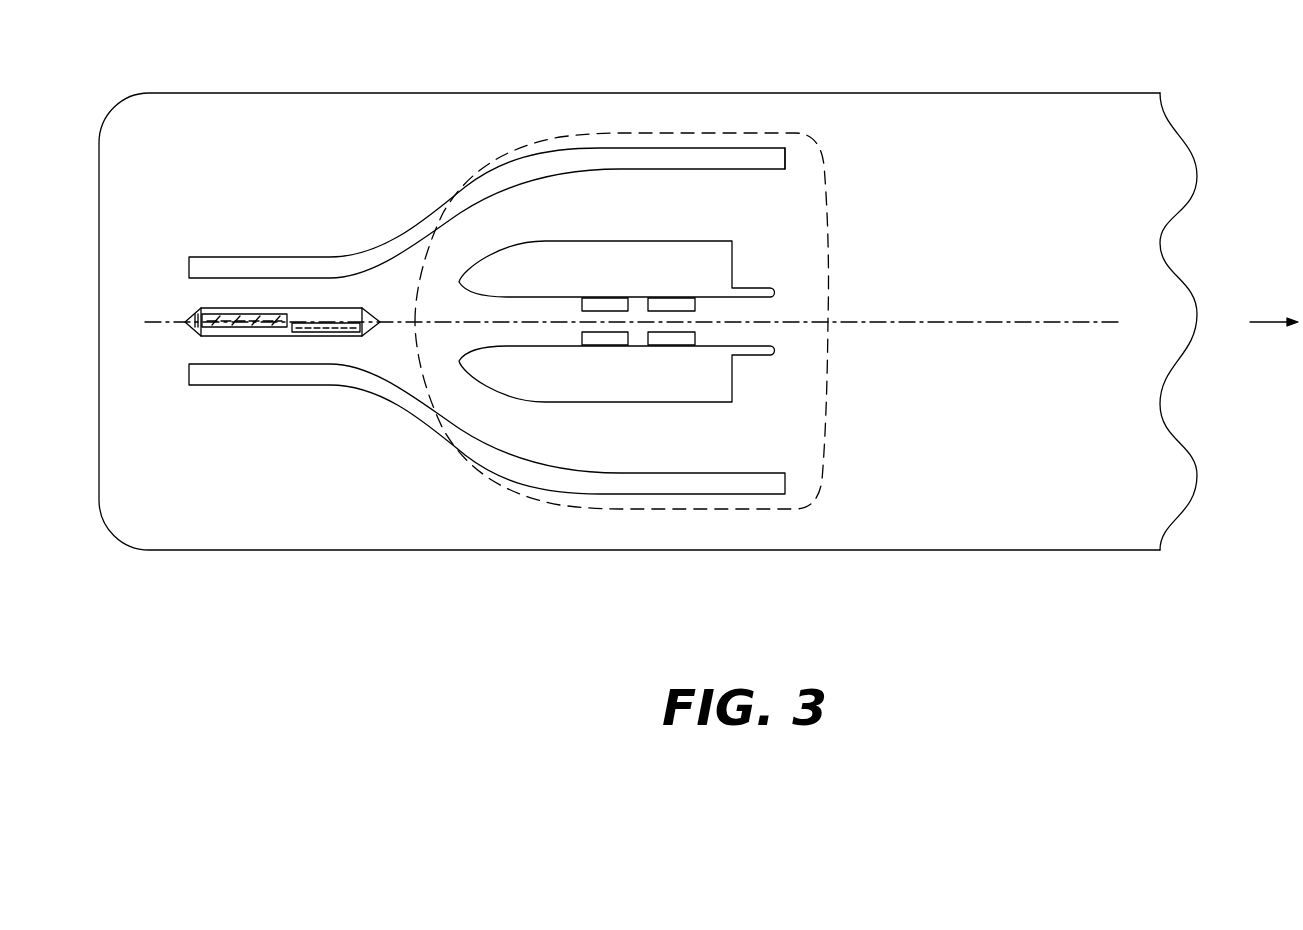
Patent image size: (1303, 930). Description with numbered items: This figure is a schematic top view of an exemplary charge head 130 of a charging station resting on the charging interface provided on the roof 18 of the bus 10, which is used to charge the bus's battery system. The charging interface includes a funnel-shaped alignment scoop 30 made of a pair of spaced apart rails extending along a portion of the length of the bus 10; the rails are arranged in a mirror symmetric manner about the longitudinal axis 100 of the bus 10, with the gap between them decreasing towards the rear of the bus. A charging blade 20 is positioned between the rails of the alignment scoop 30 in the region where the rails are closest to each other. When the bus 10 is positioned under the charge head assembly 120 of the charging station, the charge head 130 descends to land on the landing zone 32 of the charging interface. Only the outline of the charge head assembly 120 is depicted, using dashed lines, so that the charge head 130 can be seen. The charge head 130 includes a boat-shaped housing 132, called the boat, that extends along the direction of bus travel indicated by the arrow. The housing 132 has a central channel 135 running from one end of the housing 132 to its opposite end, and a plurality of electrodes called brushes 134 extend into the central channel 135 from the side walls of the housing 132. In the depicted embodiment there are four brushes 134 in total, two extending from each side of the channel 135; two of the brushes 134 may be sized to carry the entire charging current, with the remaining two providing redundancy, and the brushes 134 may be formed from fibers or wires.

The bus 10 is at (1036, 105).
The roof 18 is at (1052, 243).
The charging blade 20 is at (262, 302).
The alignment scoop 30 is at (376, 253).
The landing zone 32 is at (755, 197).
The longitudinal axis 100 is at (962, 325).
The charge head assembly 120 is at (798, 413).
The charge head 130 is at (469, 402).
The boat-shaped housing 132 is at (661, 241).
The brushes 134 is at (604, 345).
The central channel 135 is at (757, 346).